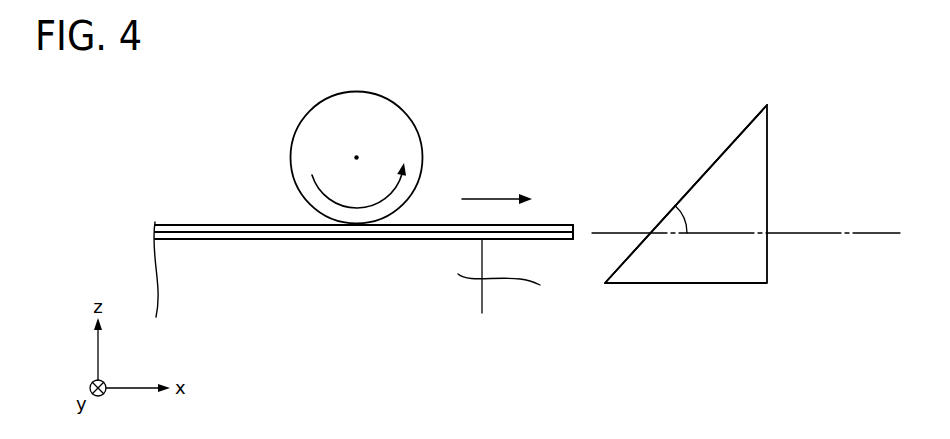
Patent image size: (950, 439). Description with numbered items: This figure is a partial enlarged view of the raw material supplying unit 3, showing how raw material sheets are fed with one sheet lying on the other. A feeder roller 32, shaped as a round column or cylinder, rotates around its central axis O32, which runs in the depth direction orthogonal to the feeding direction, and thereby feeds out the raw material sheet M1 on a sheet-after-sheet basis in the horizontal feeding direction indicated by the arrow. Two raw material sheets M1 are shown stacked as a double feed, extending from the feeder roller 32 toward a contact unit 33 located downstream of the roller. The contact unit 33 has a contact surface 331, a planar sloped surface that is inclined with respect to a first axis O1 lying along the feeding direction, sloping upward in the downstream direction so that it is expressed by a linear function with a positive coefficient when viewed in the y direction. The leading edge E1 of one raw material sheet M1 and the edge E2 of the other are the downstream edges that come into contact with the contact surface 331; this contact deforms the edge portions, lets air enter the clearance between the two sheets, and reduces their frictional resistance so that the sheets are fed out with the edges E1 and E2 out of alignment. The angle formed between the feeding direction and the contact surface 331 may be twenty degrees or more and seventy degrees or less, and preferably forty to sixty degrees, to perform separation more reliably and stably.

The raw material supplying unit 3 is at (586, 80).
The feeder roller 32 is at (345, 92).
The central axis O32 is at (356, 157).
The leading edge E1 is at (577, 229).
The edge E2 is at (578, 237).
The raw material sheet M1 is at (542, 225).
The contact unit 33 is at (767, 175).
The contact surface 331 is at (622, 262).
The first axis O1 is at (868, 235).